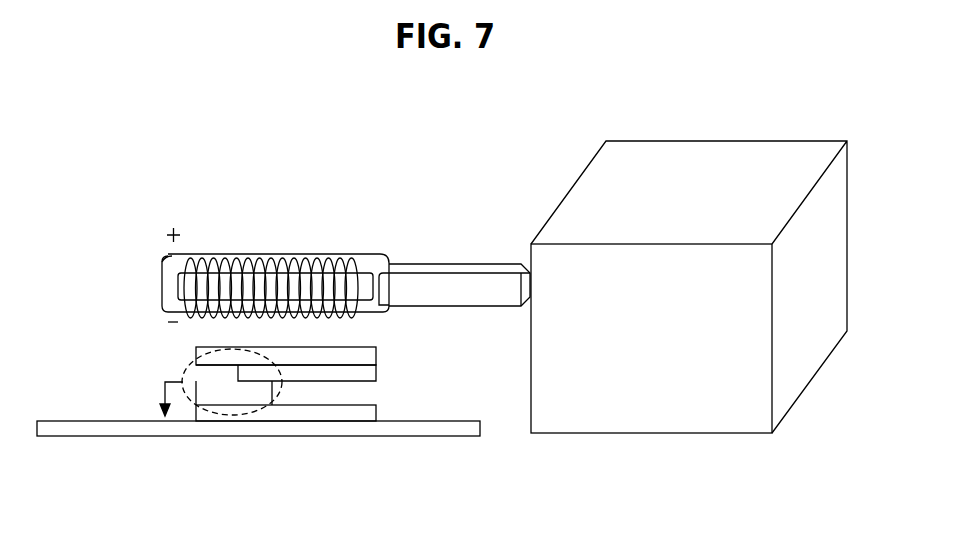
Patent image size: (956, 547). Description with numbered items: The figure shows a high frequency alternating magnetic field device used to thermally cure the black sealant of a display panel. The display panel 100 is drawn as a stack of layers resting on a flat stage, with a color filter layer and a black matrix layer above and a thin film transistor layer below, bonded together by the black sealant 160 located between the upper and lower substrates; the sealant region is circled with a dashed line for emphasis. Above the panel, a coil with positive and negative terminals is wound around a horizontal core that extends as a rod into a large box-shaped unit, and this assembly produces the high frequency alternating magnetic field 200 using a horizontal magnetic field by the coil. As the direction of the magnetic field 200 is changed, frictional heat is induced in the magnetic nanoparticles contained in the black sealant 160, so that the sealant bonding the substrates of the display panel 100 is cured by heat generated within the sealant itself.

The display panel 100 is at (224, 424).
The black sealant 160 is at (212, 398).
The high frequency alternating magnetic field 200 is at (447, 236).